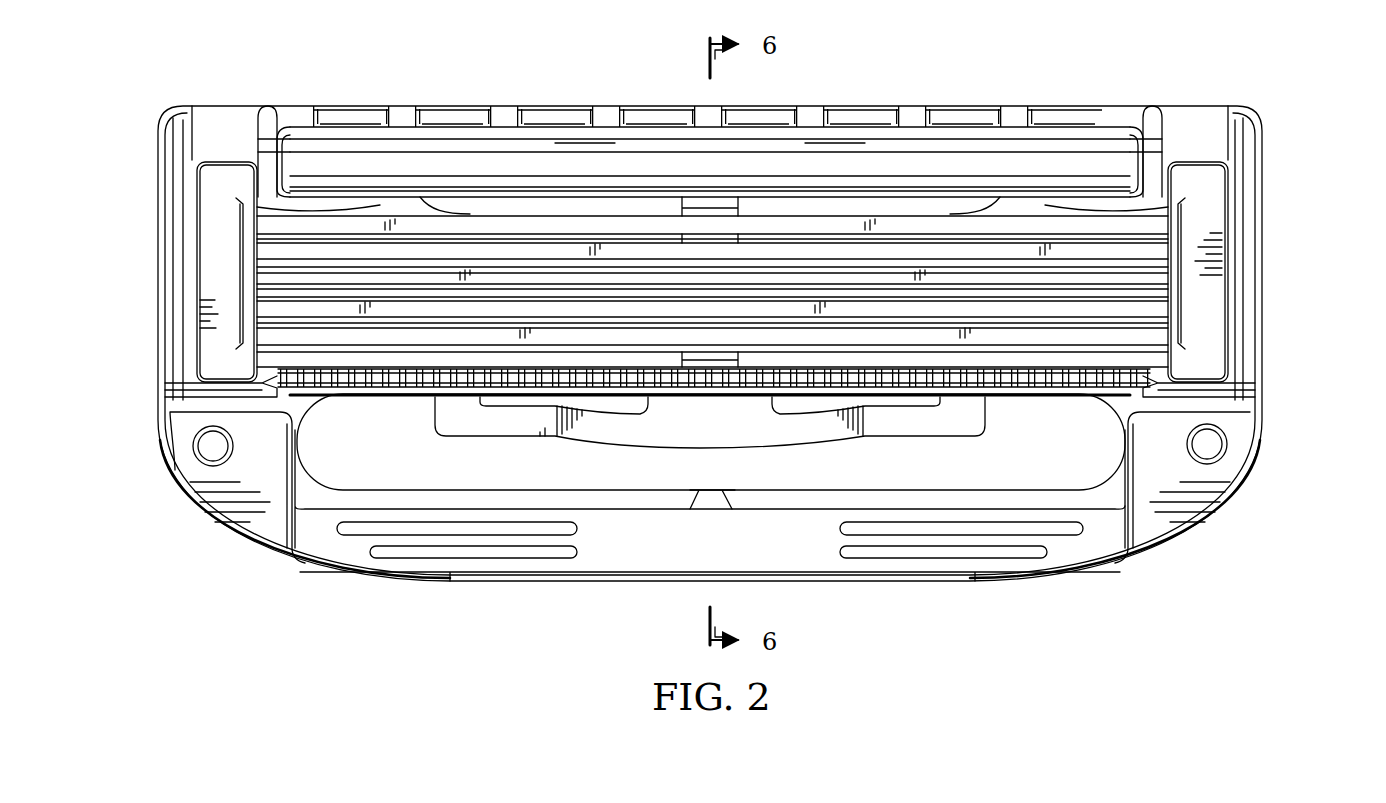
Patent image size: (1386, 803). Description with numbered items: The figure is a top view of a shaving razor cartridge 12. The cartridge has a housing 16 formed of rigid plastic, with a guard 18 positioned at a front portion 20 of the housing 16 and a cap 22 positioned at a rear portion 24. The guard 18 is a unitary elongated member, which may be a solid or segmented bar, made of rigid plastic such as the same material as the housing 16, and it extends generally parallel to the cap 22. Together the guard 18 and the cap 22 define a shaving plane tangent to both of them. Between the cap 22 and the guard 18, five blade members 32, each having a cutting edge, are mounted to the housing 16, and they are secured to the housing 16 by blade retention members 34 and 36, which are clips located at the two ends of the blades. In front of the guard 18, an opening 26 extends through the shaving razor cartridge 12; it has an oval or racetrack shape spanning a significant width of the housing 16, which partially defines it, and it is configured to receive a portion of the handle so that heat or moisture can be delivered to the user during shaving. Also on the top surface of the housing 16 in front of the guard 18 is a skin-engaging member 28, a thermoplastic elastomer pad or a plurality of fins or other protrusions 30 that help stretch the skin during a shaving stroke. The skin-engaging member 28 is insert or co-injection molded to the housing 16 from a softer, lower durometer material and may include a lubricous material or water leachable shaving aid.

The shaving razor cartridge 12 is at (769, 315).
The housing 16 is at (1268, 287).
The guard 18 is at (1122, 386).
The front portion 20 is at (156, 525).
The cap 22 is at (812, 155).
The rear portion 24 is at (130, 120).
The opening 26 is at (992, 458).
The skin-engaging member 28 is at (350, 548).
The protrusions 30 is at (507, 560).
The blade members 32 is at (232, 272).
The blade retention member 34 is at (1200, 213).
The blade retention member 36 is at (215, 354).